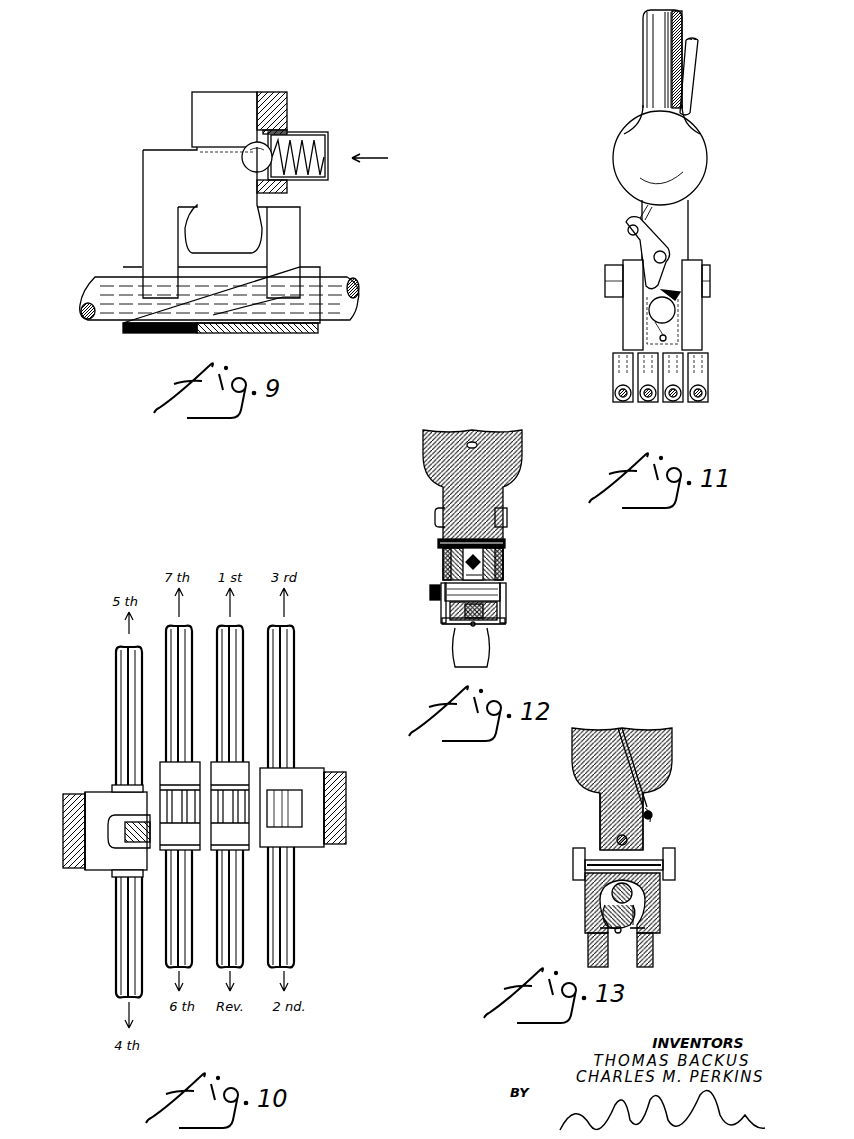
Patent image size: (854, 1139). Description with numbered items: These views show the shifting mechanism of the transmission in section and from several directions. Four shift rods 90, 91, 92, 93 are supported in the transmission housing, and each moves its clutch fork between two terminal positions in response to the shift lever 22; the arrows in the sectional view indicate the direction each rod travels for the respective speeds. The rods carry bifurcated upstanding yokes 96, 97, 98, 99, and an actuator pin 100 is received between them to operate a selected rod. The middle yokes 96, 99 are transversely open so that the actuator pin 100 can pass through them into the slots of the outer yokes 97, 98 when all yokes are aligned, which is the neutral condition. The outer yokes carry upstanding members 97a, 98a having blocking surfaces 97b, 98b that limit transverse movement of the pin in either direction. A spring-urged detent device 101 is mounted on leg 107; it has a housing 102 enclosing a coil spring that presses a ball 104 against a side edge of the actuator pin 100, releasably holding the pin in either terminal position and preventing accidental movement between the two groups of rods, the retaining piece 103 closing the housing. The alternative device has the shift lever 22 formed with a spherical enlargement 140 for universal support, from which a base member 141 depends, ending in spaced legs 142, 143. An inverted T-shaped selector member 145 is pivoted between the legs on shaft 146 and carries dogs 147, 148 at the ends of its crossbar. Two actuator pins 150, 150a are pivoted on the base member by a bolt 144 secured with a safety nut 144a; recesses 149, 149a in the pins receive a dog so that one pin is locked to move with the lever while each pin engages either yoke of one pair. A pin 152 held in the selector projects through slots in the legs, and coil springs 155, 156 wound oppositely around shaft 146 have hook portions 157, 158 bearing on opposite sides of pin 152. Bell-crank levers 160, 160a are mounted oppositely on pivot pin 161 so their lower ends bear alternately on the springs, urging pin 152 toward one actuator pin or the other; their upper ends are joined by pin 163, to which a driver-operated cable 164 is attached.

In FIG. 11, the shift lever 22 is at (683, 28).
In FIG. 11, the shift rod 90 is at (675, 400).
In FIG. 10, the shift rod 90 is at (180, 900).
In FIG. 11, the shift rod 91 is at (702, 398).
In FIG. 10, the shift rod 91 is at (120, 930).
In FIG. 9, the shift rod 92 is at (362, 288).
In FIG. 11, the shift rod 92 is at (618, 398).
In FIG. 10, the shift rod 92 is at (285, 905).
In FIG. 11, the shift rod 93 is at (646, 400).
In FIG. 10, the shift rod 93 is at (230, 885).
In FIG. 10, the yoke 96 is at (166, 775).
In FIG. 10, the yoke 97 is at (125, 860).
In FIG. 10, the upstanding member 97a is at (68, 850).
In FIG. 10, the blocking surface 97b is at (92, 800).
In FIG. 9, the yoke 98 is at (147, 333).
In FIG. 10, the yoke 98 is at (310, 775).
In FIG. 9, the upstanding member 98a is at (142, 160).
In FIG. 10, the upstanding member 98a is at (340, 800).
In FIG. 10, the blocking surface 98b is at (322, 836).
In FIG. 10, the yoke 99 is at (245, 775).
In FIG. 9, the actuator pin 100 is at (198, 113).
In FIG. 10, the actuator pin 100 is at (115, 830).
In FIG. 9, the detent device 101 is at (389, 158).
In FIG. 9, the housing 102 is at (328, 133).
In FIG. 9, the detent retainer 103 is at (317, 178).
In FIG. 9, the ball 104 is at (243, 160).
In FIG. 9, the leg 107 is at (287, 103).
In FIG. 11, the spherical enlargement 140 is at (690, 160).
In FIG. 13, the spherical enlargement 140 is at (655, 752).
In FIG. 11, the base member 141 is at (678, 214).
In FIG. 13, the base member 141 is at (610, 822).
In FIG. 12, the leg 142 is at (443, 615).
In FIG. 12, the leg 143 is at (497, 611).
In FIG. 12, the bolt 144 is at (443, 557).
In FIG. 13, the bolt 144 is at (573, 860).
In FIG. 13, the safety nut 144a is at (675, 860).
In FIG. 12, the selector member 145 is at (462, 624).
In FIG. 13, the selector member 145 is at (608, 905).
In FIG. 12, the shaft 146 is at (502, 588).
In FIG. 13, the shaft 146 is at (632, 893).
In FIG. 13, the dog 147 is at (604, 921).
In FIG. 13, the dog 148 is at (648, 915).
In FIG. 13, the recess 149 is at (600, 926).
In FIG. 13, the recess 149a is at (648, 926).
In FIG. 11, the actuator pin 150 is at (698, 340).
In FIG. 13, the actuator pin 150 is at (588, 960).
In FIG. 11, the actuator pin 150a is at (627, 330).
In FIG. 12, the actuator pin 150a is at (488, 658).
In FIG. 13, the actuator pin 150a is at (653, 955).
In FIG. 11, the pin 152 is at (667, 336).
In FIG. 12, the pin 152 is at (472, 627).
In FIG. 13, the pin 152 is at (618, 935).
In FIG. 11, the coil spring 155 is at (672, 300).
In FIG. 12, the coil spring 155 is at (432, 597).
In FIG. 12, the coil spring 156 is at (505, 617).
In FIG. 12, the hook portion 157 is at (447, 626).
In FIG. 12, the hook portion 158 is at (506, 622).
In FIG. 11, the bell-crank lever 160 is at (650, 240).
In FIG. 12, the bell-crank lever 160 is at (443, 562).
In FIG. 13, the bell-crank lever 160 is at (655, 818).
In FIG. 12, the bell-crank lever 160a is at (504, 556).
In FIG. 11, the pivot pin 161 is at (667, 253).
In FIG. 12, the pivot pin 161 is at (503, 542).
In FIG. 13, the pivot pin 161 is at (630, 840).
In FIG. 11, the pin 163 is at (627, 232).
In FIG. 13, the pin 163 is at (652, 812).
In FIG. 11, the cable 164 is at (699, 42).
In FIG. 13, the cable 164 is at (622, 735).